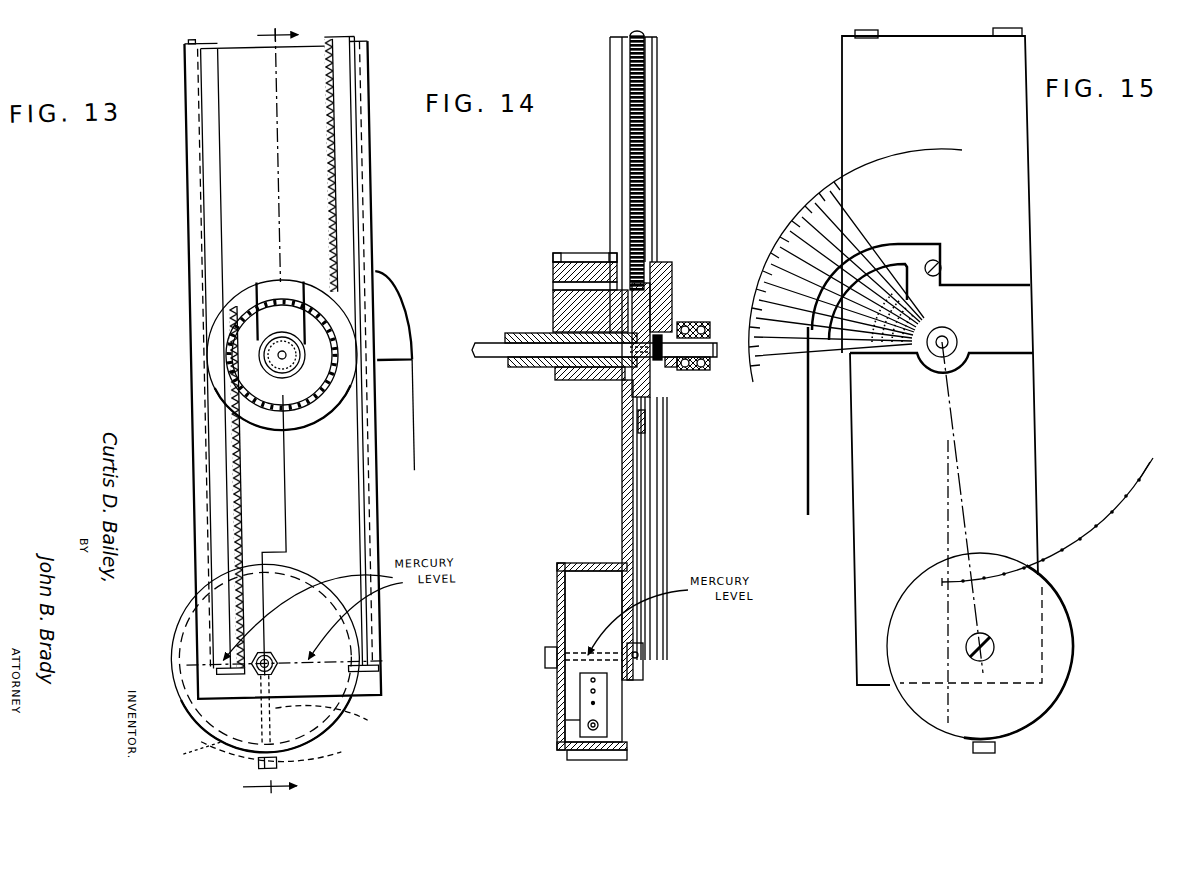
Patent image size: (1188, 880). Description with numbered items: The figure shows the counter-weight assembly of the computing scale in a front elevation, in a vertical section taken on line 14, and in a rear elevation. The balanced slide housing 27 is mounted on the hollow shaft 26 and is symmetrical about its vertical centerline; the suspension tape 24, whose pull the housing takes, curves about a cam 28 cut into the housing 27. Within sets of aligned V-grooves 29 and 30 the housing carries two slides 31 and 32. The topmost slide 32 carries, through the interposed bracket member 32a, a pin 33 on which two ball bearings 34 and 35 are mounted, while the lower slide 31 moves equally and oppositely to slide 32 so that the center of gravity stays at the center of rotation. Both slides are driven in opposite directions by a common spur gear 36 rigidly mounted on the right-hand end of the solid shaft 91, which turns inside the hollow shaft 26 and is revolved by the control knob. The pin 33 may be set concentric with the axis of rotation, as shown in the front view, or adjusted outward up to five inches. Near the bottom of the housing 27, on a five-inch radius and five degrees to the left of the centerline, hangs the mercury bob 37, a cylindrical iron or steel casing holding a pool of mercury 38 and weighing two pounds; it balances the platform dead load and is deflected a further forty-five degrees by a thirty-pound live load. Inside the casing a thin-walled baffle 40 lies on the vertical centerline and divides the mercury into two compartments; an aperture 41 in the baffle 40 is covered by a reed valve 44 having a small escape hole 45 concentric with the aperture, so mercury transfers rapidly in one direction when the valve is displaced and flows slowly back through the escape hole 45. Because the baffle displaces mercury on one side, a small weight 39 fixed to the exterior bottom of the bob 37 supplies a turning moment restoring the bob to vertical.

In FIG. 13, the section line 14- 14 is at (260, 404).
In FIG. 14, the tape 24 is at (580, 255).
In FIG. 15, the tape 24 is at (806, 483).
In FIG. 14, the hollow shaft 26 is at (540, 372).
In FIG. 13, the slide housing 27 is at (191, 163).
In FIG. 14, the slide housing 27 is at (622, 465).
In FIG. 15, the slide housing 27 is at (873, 90).
In FIG. 14, the cam 28 is at (553, 288).
In FIG. 15, the cam 28 is at (775, 258).
In FIG. 14, the V-grooves 29 is at (645, 548).
In FIG. 14, the V-grooves 30 is at (662, 495).
In FIG. 13, the slide 31 is at (334, 176).
In FIG. 14, the slide 31 is at (641, 218).
In FIG. 13, the slide 32 is at (260, 493).
In FIG. 13, the bracket member 32a is at (291, 292).
In FIG. 14, the bracket member 32a is at (663, 262).
In FIG. 13, the pin 33 is at (298, 353).
In FIG. 14, the pin 33 is at (717, 347).
In FIG. 14, the ball bearing 34 is at (684, 320).
In FIG. 14, the ball bearing 35 is at (706, 322).
In FIG. 13, the spur gear 36 is at (256, 384).
In FIG. 14, the spur gear 36 is at (663, 397).
In FIG. 13, the mercury bob 37 is at (170, 630).
In FIG. 14, the mercury bob 37 is at (552, 612).
In FIG. 15, the mercury bob 37 is at (912, 603).
In FIG. 13, the pool of mercury 38 is at (200, 668).
In FIG. 14, the pool of mercury 38 is at (580, 658).
In FIG. 13, the weight 39 is at (270, 764).
In FIG. 14, the weight 39 is at (612, 755).
In FIG. 15, the weight 39 is at (995, 752).
In FIG. 13, the baffle 40 is at (336, 717).
In FIG. 14, the baffle 40 is at (578, 673).
In FIG. 13, the aperture 41 is at (300, 746).
In FIG. 14, the aperture 41 is at (565, 722).
In FIG. 14, the reed valve 44 is at (594, 703).
In FIG. 13, the escape hole 45 is at (195, 760).
In FIG. 14, the escape hole 45 is at (600, 725).
In FIG. 14, the solid shaft 91 is at (495, 350).
In FIG. 15, the solid shaft 91 is at (952, 340).